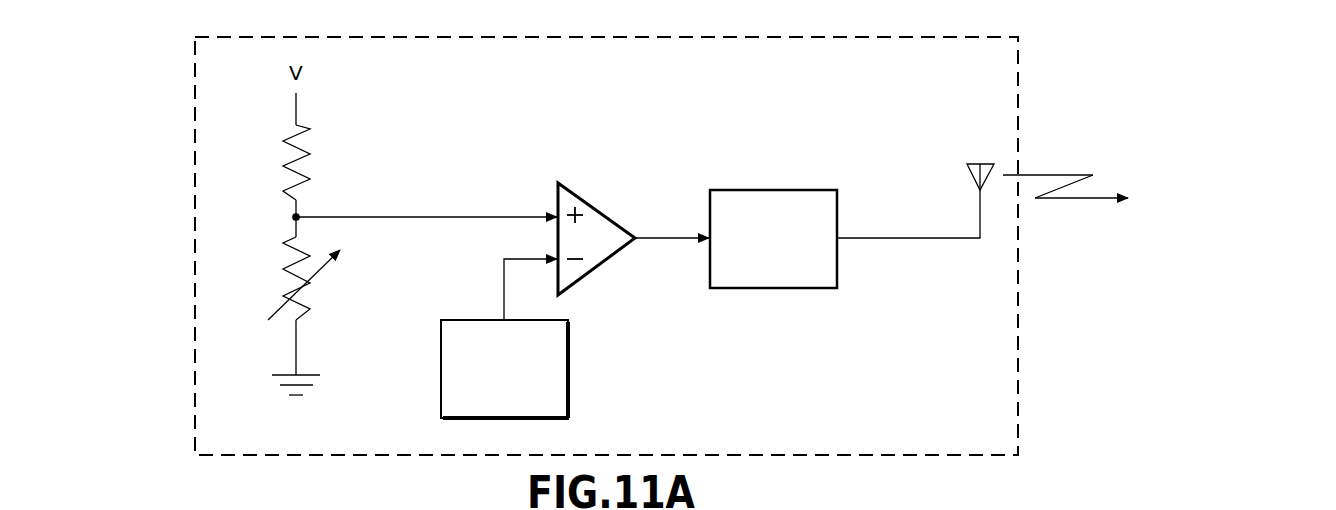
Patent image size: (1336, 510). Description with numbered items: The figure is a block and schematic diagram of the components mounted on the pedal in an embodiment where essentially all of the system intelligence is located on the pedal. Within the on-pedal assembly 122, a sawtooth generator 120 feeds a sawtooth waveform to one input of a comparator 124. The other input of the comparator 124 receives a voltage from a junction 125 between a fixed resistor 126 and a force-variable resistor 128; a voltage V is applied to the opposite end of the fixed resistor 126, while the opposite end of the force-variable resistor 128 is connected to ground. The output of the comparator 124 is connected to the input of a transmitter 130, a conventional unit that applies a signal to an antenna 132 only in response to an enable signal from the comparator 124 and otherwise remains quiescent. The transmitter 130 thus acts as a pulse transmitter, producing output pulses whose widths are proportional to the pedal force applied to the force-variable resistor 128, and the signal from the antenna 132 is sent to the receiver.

The sawtooth generator 120 is at (572, 331).
The on-pedal assembly 122 is at (1018, 390).
The comparator 124 is at (597, 207).
The junction 125 is at (298, 215).
The fixed resistor 126 is at (291, 190).
The force-variable resistor 128 is at (290, 258).
The transmitter 130 is at (808, 188).
The antenna 132 is at (975, 178).